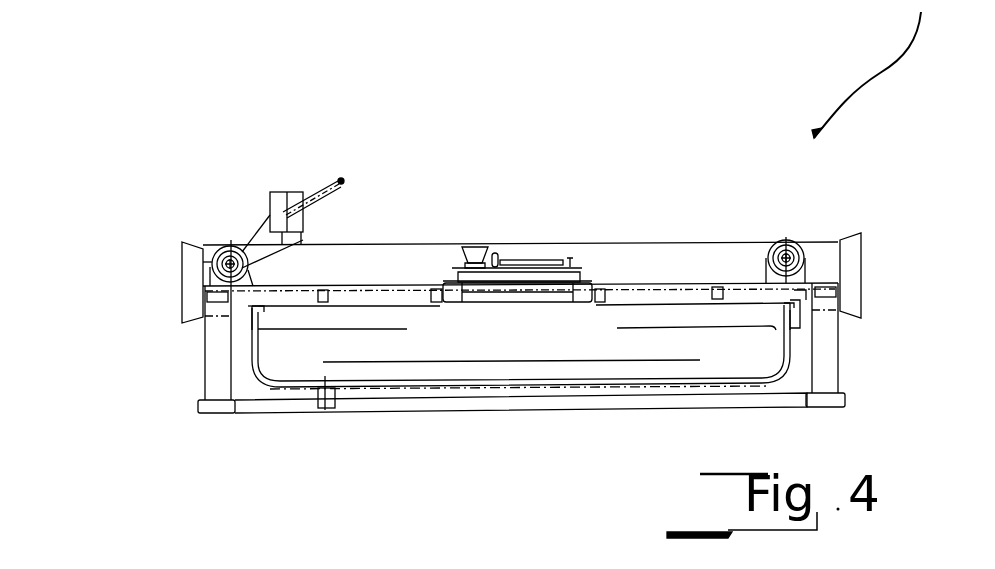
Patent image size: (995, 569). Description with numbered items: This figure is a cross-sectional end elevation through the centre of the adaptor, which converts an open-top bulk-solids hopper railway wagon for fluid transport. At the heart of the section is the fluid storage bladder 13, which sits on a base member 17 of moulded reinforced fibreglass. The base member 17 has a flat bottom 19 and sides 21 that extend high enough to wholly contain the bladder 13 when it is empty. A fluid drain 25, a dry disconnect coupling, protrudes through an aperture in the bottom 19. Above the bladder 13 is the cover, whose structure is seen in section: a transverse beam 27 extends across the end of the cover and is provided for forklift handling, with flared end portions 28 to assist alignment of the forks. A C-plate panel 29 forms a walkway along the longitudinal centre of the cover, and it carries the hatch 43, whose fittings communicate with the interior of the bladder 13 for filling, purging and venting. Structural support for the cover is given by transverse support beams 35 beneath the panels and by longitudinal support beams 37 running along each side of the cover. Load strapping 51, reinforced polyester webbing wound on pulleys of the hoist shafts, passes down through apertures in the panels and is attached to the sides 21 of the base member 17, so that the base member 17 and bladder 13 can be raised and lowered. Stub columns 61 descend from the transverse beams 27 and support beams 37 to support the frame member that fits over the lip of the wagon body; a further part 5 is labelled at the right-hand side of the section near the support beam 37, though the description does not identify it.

The support bracket 5 is at (797, 290).
The fluid storage bladder 13 is at (630, 378).
The base member 17 is at (266, 412).
The flat bottom 19 is at (521, 383).
The sides 21 is at (256, 330).
The fluid drain 25 is at (336, 408).
The transverse beams 27 is at (672, 243).
The flared end portions 28 is at (845, 238).
The C-plate panel 29 is at (416, 287).
The transverse support beams 35 is at (298, 296).
The longitudinal support beams 37 is at (817, 241).
The hatch 43 is at (519, 228).
The load strapping 51 is at (252, 312).
The stub columns 61 is at (204, 383).